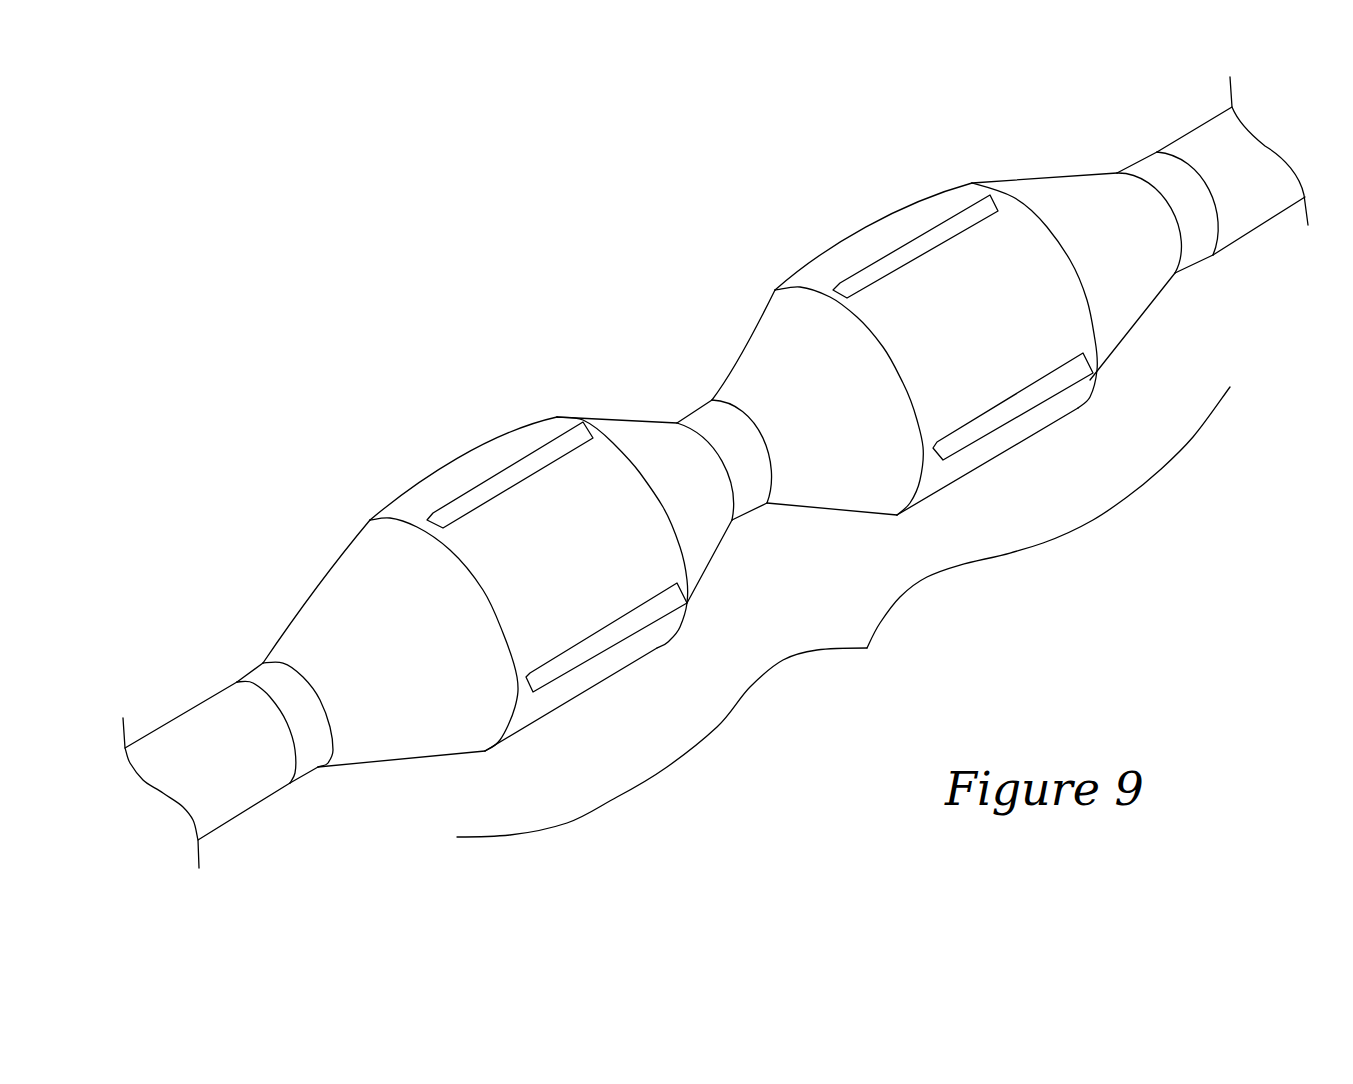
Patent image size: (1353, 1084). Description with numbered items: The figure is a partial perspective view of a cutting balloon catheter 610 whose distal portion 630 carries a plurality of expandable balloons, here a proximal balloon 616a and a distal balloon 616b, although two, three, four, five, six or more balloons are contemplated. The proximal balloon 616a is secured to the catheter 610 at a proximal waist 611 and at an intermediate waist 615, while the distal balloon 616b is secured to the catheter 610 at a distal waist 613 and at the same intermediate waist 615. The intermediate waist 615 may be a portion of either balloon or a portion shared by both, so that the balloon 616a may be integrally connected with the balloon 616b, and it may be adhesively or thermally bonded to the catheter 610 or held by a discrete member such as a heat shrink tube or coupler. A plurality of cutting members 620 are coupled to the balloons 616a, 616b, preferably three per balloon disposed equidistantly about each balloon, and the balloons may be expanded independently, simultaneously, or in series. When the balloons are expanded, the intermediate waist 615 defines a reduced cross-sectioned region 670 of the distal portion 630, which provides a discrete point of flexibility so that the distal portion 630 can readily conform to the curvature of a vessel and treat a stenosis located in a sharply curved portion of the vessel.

The catheter 610 is at (245, 575).
The proximal waist 611 is at (304, 765).
The distal waist 613 is at (1197, 243).
The intermediate waist 615 is at (700, 417).
The proximal balloon 616a is at (500, 527).
The distal balloon 616b is at (967, 277).
The cutting members 620 is at (547, 453).
The distal portion 630 is at (843, 612).
The reduced cross-sectioned region 670 is at (750, 502).